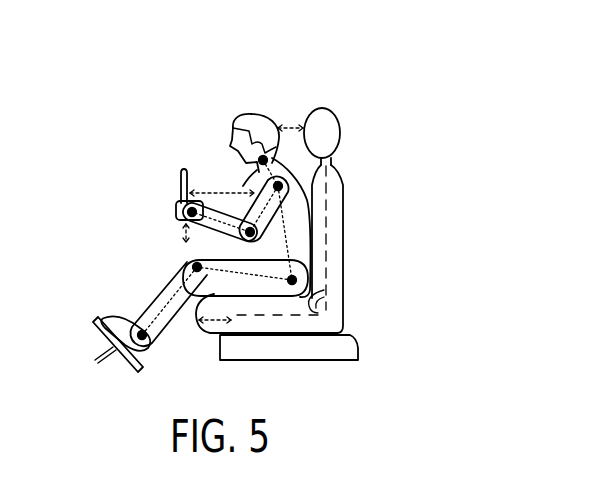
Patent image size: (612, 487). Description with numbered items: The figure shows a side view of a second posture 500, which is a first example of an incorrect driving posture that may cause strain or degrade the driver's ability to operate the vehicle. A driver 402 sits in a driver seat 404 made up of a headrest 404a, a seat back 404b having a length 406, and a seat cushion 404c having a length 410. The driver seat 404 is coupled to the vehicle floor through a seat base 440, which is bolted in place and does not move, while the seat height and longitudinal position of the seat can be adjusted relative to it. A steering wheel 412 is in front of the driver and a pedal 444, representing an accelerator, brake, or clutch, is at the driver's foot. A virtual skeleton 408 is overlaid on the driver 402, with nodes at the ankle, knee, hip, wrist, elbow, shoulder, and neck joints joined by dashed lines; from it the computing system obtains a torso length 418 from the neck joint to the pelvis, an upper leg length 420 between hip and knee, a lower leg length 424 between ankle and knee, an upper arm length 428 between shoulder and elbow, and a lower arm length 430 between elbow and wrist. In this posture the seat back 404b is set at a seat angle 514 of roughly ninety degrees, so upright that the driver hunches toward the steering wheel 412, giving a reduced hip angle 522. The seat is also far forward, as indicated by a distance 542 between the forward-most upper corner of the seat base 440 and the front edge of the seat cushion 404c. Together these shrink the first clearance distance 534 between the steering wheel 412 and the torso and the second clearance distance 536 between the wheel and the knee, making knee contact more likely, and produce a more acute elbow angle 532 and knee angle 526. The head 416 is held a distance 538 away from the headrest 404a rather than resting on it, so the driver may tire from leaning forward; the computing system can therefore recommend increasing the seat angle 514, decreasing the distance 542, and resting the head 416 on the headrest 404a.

The second posture 500 is at (429, 58).
The driver 402 is at (236, 84).
The head 416 is at (243, 116).
The virtual skeleton 408 is at (220, 142).
The distance 538 is at (294, 126).
The driver seat 404 is at (360, 137).
The headrest 404a is at (340, 118).
The seat back 404b is at (347, 163).
The seat cushion 404c is at (213, 342).
The length 406 is at (328, 193).
The steering wheel 412 is at (183, 170).
The first clearance distance 534 is at (200, 195).
The upper arm length 428 is at (255, 192).
The elbow angle 532 is at (190, 211).
The lower arm length 430 is at (186, 220).
The torso length 418 is at (290, 250).
The hip angle 522 is at (242, 260).
The second clearance distance 536 is at (182, 251).
The knee angle 526 is at (190, 267).
The seat angle 514 is at (330, 285).
The lower leg length 424 is at (160, 298).
The upper leg length 420 is at (223, 307).
The length 410 is at (258, 318).
The distance 542 is at (150, 341).
The seat base 440 is at (350, 338).
The pedal 444 is at (137, 370).